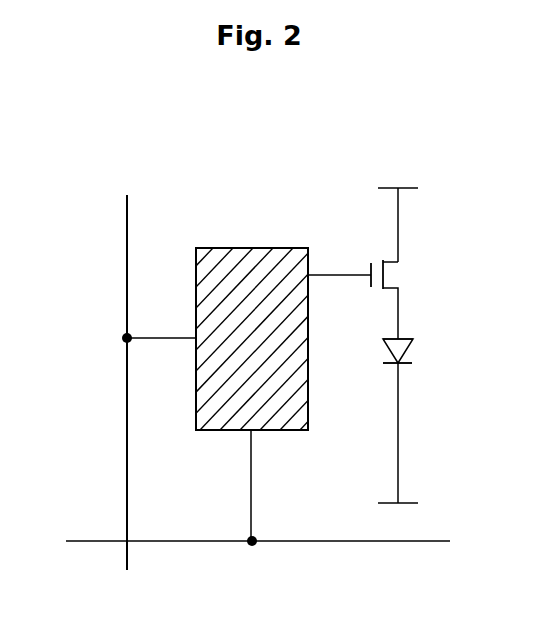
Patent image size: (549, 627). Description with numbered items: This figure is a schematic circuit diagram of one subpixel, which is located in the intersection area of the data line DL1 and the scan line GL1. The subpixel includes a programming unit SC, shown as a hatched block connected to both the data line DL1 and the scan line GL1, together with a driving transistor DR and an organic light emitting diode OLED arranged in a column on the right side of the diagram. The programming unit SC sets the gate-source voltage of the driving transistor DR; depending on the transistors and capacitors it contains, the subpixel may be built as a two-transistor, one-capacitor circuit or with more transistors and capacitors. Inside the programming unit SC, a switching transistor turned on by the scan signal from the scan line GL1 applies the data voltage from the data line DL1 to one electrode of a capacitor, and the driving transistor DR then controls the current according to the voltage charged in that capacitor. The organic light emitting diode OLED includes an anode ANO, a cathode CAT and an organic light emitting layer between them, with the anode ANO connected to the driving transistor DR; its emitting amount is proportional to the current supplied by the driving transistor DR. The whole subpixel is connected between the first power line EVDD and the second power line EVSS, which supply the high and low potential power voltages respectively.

The data line DL1 is at (125, 237).
The scan line GL1 is at (92, 541).
The programming unit SC is at (248, 258).
The driving transistor DR is at (398, 299).
The organic light emitting diode OLED is at (422, 421).
The anode ANO is at (401, 338).
The cathode CAT is at (400, 364).
The first power line EVDD is at (398, 213).
The second power line EVSS is at (398, 517).